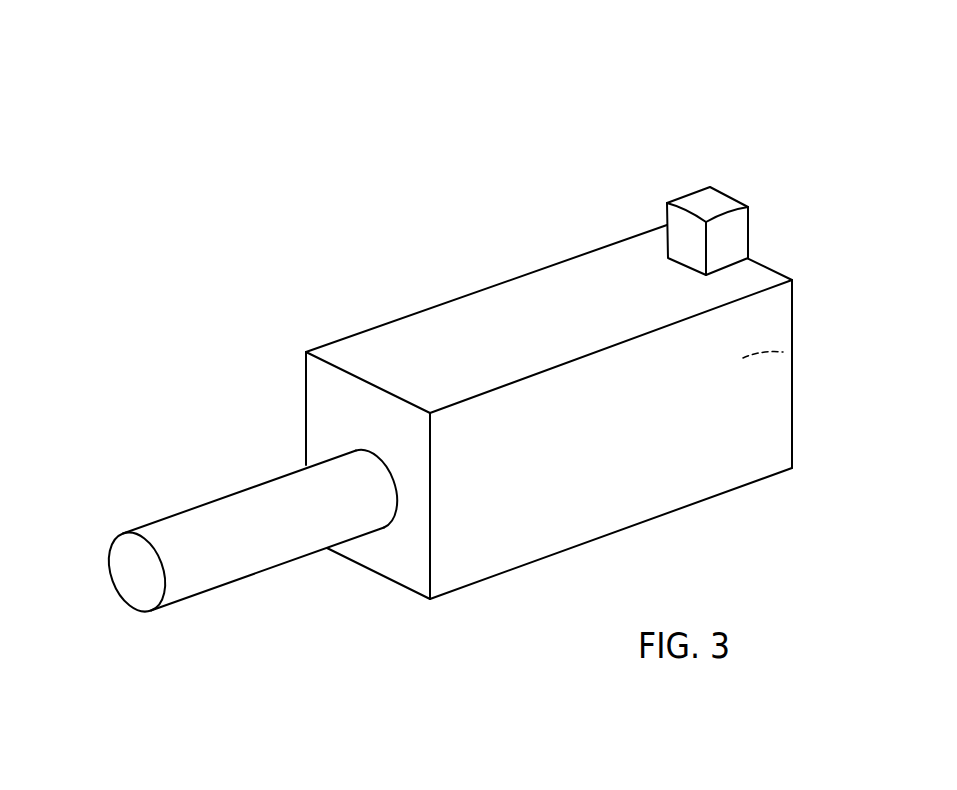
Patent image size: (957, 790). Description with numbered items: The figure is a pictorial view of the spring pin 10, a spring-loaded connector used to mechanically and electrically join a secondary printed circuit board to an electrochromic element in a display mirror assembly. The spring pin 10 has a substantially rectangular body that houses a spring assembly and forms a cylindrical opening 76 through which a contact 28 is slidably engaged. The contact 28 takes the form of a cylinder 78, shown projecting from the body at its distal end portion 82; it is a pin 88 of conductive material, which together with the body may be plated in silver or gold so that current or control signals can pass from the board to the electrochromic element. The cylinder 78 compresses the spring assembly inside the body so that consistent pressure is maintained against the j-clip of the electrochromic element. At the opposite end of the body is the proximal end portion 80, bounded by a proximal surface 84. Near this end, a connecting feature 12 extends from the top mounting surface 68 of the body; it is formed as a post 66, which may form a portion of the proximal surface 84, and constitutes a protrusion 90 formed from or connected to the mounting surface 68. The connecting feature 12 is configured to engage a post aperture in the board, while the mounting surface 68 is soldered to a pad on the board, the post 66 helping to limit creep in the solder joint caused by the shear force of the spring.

The spring pin 10 is at (832, 85).
The connecting feature 12 is at (782, 231).
The contact 28 is at (248, 565).
The post 66 is at (782, 231).
The mounting surface 68 is at (447, 320).
The opening 76 is at (385, 473).
The cylinder 78 is at (248, 565).
The proximal end portion 80 is at (775, 445).
The distal end portion 82 is at (416, 607).
The proximal surface 84 is at (792, 352).
The pin 88 is at (205, 580).
The protrusion 90 is at (732, 230).